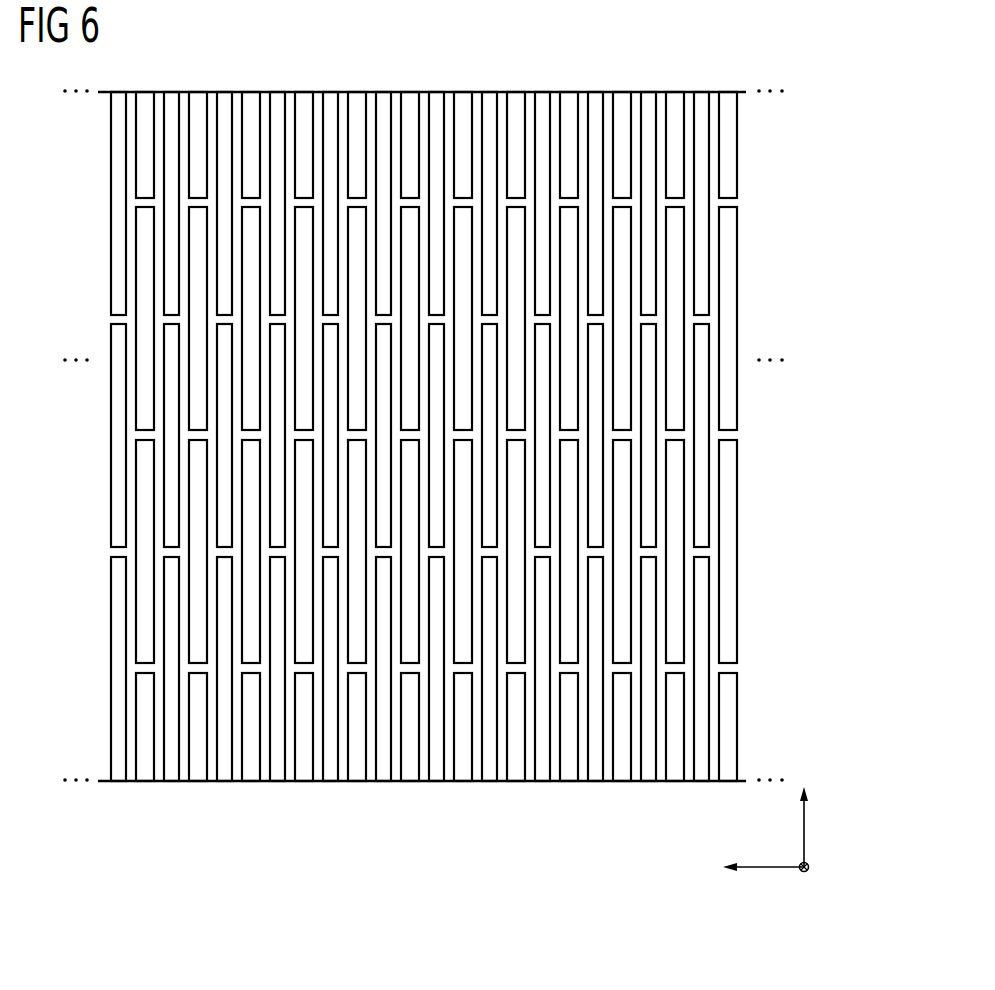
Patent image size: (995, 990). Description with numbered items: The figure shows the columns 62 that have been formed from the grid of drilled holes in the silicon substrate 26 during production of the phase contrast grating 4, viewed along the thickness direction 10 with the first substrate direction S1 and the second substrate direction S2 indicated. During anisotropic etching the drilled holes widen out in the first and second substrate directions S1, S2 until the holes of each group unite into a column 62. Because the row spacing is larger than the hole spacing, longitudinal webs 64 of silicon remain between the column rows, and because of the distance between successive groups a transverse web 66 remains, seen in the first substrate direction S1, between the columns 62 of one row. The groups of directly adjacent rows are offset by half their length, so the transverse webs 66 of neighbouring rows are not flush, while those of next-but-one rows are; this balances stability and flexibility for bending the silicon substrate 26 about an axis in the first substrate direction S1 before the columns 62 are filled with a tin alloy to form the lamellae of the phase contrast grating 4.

The phase contrast grating 4 is at (424, 399).
The silicon substrate 26 is at (183, 90).
The column 62 is at (117, 397).
The longitudinal web 64 is at (131, 250).
The transverse web 66 is at (732, 202).
The thickness direction 10 is at (810, 867).
The first substrate direction S1 is at (806, 832).
The second substrate direction S2 is at (757, 869).